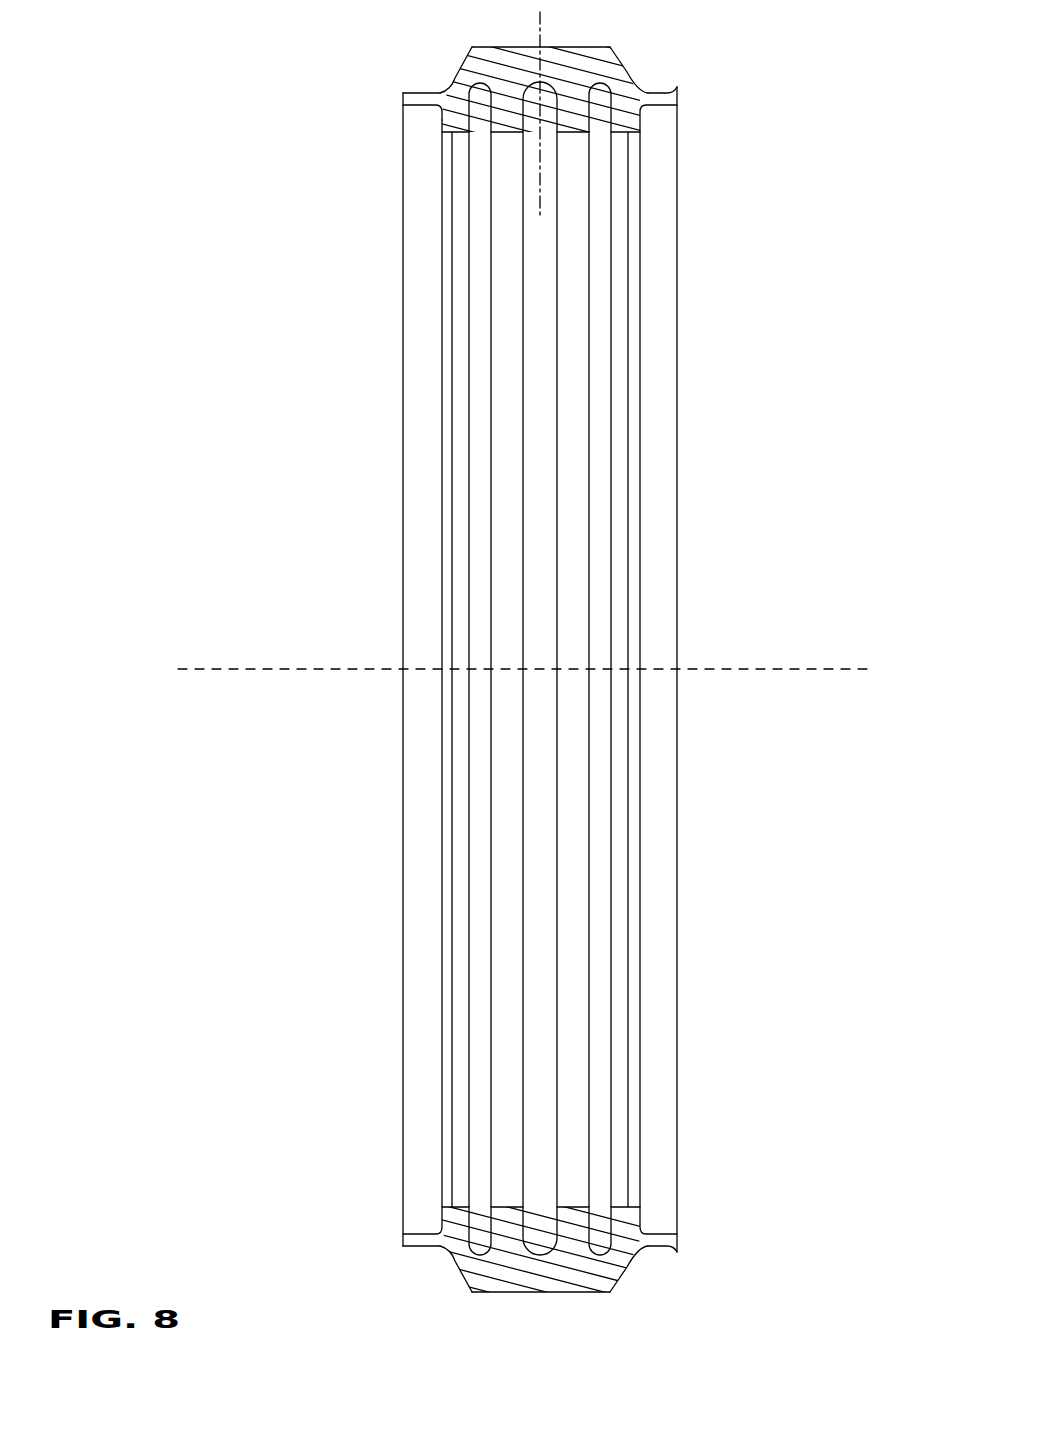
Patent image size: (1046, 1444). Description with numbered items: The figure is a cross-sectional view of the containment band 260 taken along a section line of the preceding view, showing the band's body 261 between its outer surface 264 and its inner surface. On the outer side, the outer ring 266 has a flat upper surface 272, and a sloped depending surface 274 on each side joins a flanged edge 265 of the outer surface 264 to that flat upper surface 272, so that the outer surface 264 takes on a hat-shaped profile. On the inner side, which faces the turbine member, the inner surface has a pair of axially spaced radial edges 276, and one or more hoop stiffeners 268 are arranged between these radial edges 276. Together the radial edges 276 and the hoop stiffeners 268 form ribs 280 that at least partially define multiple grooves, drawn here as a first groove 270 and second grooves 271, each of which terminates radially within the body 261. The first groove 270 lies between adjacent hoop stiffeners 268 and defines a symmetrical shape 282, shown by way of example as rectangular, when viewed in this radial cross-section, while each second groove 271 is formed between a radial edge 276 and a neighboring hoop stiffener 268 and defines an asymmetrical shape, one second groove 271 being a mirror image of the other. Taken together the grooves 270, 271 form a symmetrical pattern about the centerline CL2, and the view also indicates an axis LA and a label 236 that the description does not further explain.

The containment band 260 is at (192, 56).
The body 261 is at (630, 115).
The outer surface 264 is at (633, 68).
The flanged edge 265 is at (435, 92).
The outer ring 266 is at (567, 47).
The hoop stiffener 268 is at (507, 1057).
The first groove 270 is at (535, 1226).
The second groove 271 is at (470, 1260).
The flat upper surface 272 is at (523, 47).
The sloped depending surface 274 is at (463, 77).
The radial edge 276 is at (635, 235).
The rib 280 is at (591, 1240).
The symmetrical shape 282 is at (543, 1262).
The outer channel 236 is at (485, 83).
The centerline CL2 is at (540, 22).
The lateral axis LA is at (277, 667).